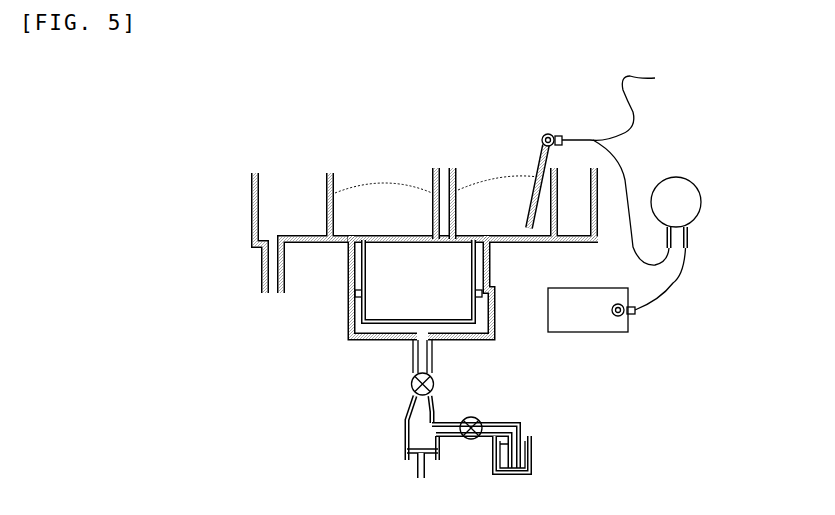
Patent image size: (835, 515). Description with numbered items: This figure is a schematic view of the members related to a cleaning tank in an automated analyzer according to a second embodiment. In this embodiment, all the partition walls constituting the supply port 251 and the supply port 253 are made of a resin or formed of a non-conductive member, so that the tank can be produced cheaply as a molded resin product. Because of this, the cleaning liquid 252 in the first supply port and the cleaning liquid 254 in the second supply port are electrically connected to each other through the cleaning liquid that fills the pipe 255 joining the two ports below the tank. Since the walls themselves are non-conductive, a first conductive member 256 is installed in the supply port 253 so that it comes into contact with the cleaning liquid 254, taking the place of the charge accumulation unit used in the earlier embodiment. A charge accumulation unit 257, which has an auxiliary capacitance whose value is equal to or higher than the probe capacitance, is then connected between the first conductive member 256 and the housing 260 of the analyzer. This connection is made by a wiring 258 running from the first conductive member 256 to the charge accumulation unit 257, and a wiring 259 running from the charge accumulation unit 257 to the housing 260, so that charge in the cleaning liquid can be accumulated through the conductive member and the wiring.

The supply port 251 is at (392, 178).
The cleaning liquid 252 is at (356, 213).
The supply port 253 is at (498, 176).
The cleaning liquid 254 is at (478, 199).
The pipe 255 is at (347, 317).
The first conductive member 256 is at (541, 150).
The charge accumulation unit 257 is at (676, 190).
The wiring 258 is at (635, 166).
The wiring 259 is at (673, 274).
The housing 260 is at (580, 308).